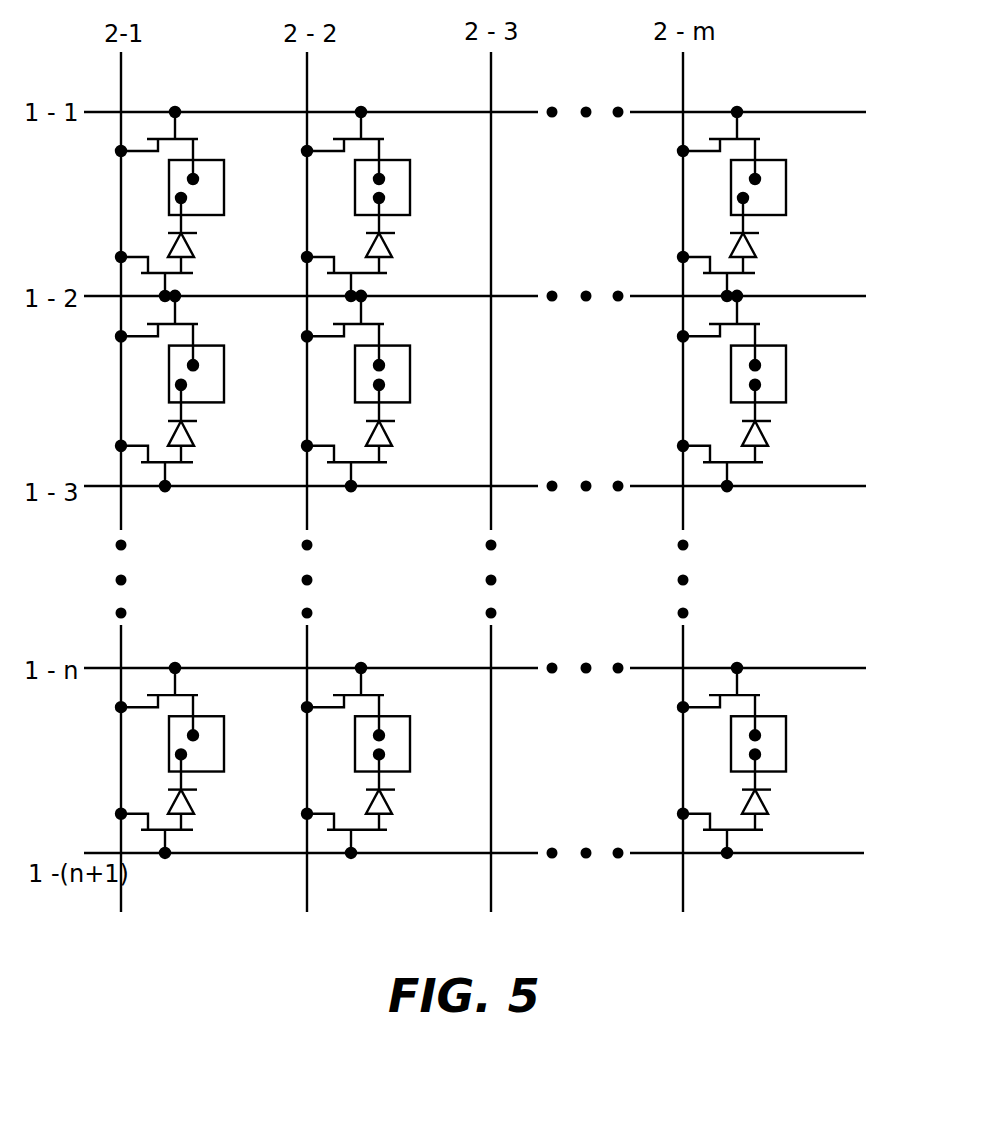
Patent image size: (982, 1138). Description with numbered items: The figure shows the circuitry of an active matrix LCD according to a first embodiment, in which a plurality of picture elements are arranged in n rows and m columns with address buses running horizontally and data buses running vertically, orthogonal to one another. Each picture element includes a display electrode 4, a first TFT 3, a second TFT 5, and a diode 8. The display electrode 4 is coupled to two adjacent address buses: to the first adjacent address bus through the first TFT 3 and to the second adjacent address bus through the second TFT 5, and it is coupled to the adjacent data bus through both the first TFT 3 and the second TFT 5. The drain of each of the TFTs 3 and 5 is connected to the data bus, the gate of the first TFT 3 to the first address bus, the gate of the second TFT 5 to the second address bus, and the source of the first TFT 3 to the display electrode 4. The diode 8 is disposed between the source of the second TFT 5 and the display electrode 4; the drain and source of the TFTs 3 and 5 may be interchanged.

The first TFT 3 is at (743, 111).
The display electrode 4 is at (780, 185).
The diode 8 is at (784, 236).
The second TFT 5 is at (748, 293).